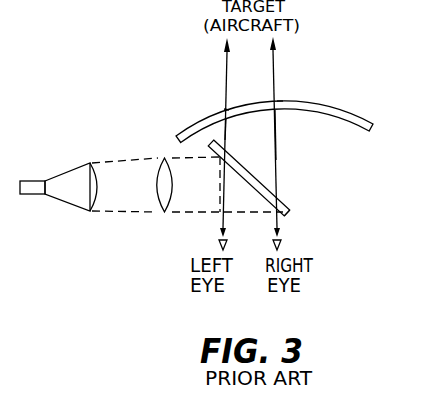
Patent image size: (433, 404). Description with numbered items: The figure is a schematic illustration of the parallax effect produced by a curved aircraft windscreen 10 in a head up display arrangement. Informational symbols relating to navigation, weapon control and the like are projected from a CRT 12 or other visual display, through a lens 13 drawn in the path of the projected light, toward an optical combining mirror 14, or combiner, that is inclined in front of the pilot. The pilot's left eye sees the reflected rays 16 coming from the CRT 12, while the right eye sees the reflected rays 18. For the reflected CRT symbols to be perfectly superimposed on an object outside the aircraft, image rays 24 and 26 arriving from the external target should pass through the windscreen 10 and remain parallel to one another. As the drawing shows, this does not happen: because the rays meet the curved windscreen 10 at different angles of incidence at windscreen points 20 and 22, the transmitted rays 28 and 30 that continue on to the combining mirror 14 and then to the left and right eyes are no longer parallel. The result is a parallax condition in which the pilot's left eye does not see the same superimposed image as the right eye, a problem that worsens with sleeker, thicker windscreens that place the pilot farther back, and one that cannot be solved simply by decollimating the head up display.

The curved windscreen 10 is at (352, 108).
The CRT 12 is at (68, 205).
The lens 13 is at (160, 211).
The optical combining mirror 14 is at (265, 183).
The reflected rays 16 is at (221, 172).
The reflected rays 18 is at (282, 217).
The windscreen point 20 is at (226, 108).
The windscreen point 22 is at (280, 102).
The image ray 24 is at (227, 58).
The image ray 26 is at (273, 60).
The transmitted ray 28 is at (228, 133).
The transmitted ray 30 is at (277, 150).